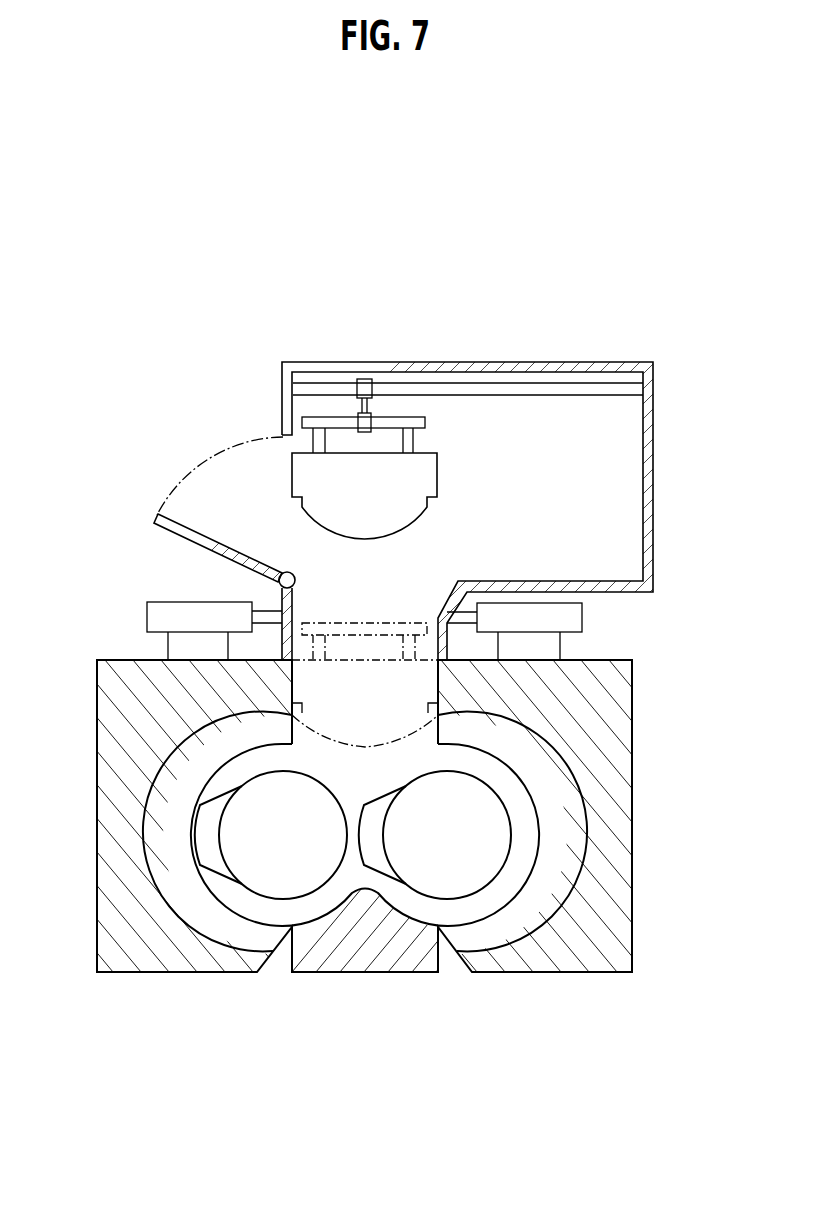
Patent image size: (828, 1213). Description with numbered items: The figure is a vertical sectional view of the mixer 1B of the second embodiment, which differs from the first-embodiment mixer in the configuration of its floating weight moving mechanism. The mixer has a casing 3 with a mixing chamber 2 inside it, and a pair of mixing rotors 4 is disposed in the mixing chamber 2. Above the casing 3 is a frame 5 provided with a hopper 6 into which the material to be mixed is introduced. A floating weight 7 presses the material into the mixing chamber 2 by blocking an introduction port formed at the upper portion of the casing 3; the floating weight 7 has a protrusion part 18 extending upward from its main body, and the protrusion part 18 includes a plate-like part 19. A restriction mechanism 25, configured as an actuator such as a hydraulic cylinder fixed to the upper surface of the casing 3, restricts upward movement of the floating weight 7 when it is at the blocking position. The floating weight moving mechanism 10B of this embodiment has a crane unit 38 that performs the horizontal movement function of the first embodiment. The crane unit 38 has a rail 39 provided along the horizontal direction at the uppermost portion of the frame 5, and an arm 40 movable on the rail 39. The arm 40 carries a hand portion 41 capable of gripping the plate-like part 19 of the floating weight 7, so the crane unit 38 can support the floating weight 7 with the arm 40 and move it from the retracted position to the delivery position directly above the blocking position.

The mixer 1B is at (162, 243).
The mixing chamber 2 is at (519, 855).
The casing 3 is at (414, 816).
The mixing rotors 4 is at (265, 852).
The frame 5 is at (440, 365).
The hopper 6 is at (177, 532).
The floating weight 7 is at (348, 472).
The floating weight moving mechanism 10B is at (468, 331).
The crane unit 38 is at (468, 331).
The rail 39 is at (602, 388).
The arm 40 is at (365, 388).
The hand portion 41 is at (368, 430).
The protrusion part 18 is at (292, 517).
The plate-like part 19 is at (305, 423).
The restriction mechanism 25 is at (147, 617).